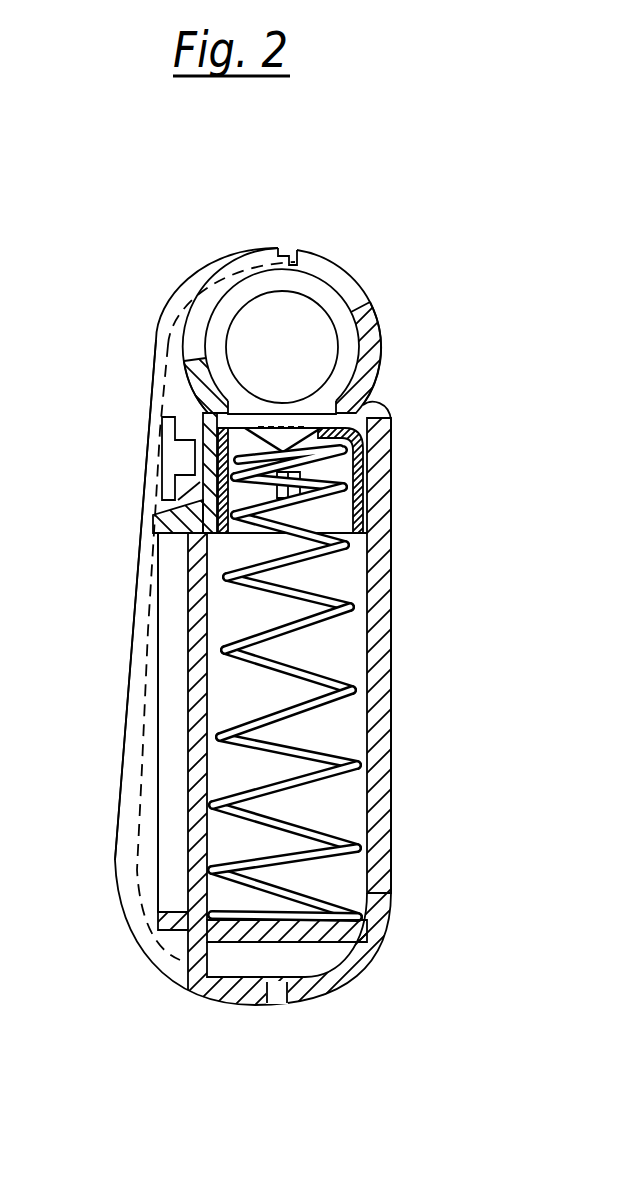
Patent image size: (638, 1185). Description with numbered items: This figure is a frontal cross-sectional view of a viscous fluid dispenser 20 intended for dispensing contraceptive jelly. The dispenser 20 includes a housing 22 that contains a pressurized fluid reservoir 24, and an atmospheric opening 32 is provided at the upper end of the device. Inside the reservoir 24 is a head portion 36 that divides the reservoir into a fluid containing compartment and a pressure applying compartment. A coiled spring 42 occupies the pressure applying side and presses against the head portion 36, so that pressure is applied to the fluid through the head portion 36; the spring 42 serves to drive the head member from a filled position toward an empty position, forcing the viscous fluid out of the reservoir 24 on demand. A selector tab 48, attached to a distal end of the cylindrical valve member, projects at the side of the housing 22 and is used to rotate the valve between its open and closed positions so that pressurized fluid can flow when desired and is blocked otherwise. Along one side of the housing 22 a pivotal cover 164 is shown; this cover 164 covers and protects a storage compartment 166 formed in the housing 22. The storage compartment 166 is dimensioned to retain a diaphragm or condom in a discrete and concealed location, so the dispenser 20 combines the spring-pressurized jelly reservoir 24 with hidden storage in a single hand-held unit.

The dispenser 20 is at (174, 243).
The housing 22 is at (377, 520).
The pressurized fluid reservoir 24 is at (340, 822).
The atmospheric opening 32 is at (298, 305).
The head portion 36 is at (362, 525).
The coiled spring 42 is at (350, 703).
The selector tab 48 is at (160, 494).
The pivotal cover 164 is at (130, 690).
The storage compartment 166 is at (166, 858).